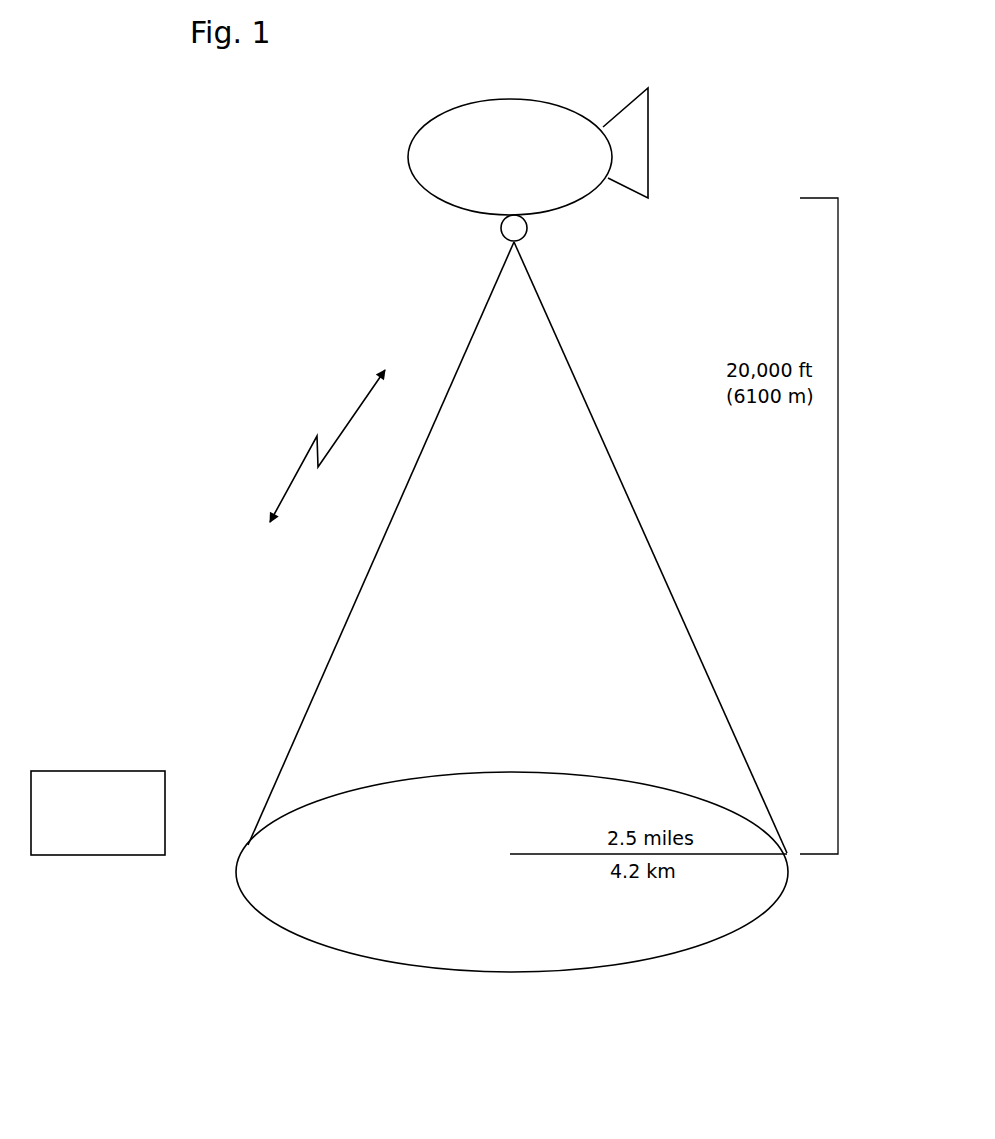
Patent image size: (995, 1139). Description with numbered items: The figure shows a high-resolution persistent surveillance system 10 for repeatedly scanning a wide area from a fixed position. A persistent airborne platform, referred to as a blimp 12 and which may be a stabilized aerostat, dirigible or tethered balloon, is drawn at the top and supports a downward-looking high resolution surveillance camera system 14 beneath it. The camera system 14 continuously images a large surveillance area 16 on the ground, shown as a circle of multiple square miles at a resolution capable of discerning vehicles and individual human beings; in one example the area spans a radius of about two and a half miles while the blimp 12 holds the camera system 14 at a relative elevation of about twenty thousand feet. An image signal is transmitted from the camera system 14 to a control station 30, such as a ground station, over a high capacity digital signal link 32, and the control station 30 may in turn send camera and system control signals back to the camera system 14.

The persistent surveillance system 10 is at (754, 111).
The blimp 12 is at (408, 155).
The high resolution surveillance camera system 14 is at (500, 228).
The surveillance area 16 is at (503, 777).
The control station 30 is at (98, 770).
The high capacity digital signal link 32 is at (298, 468).